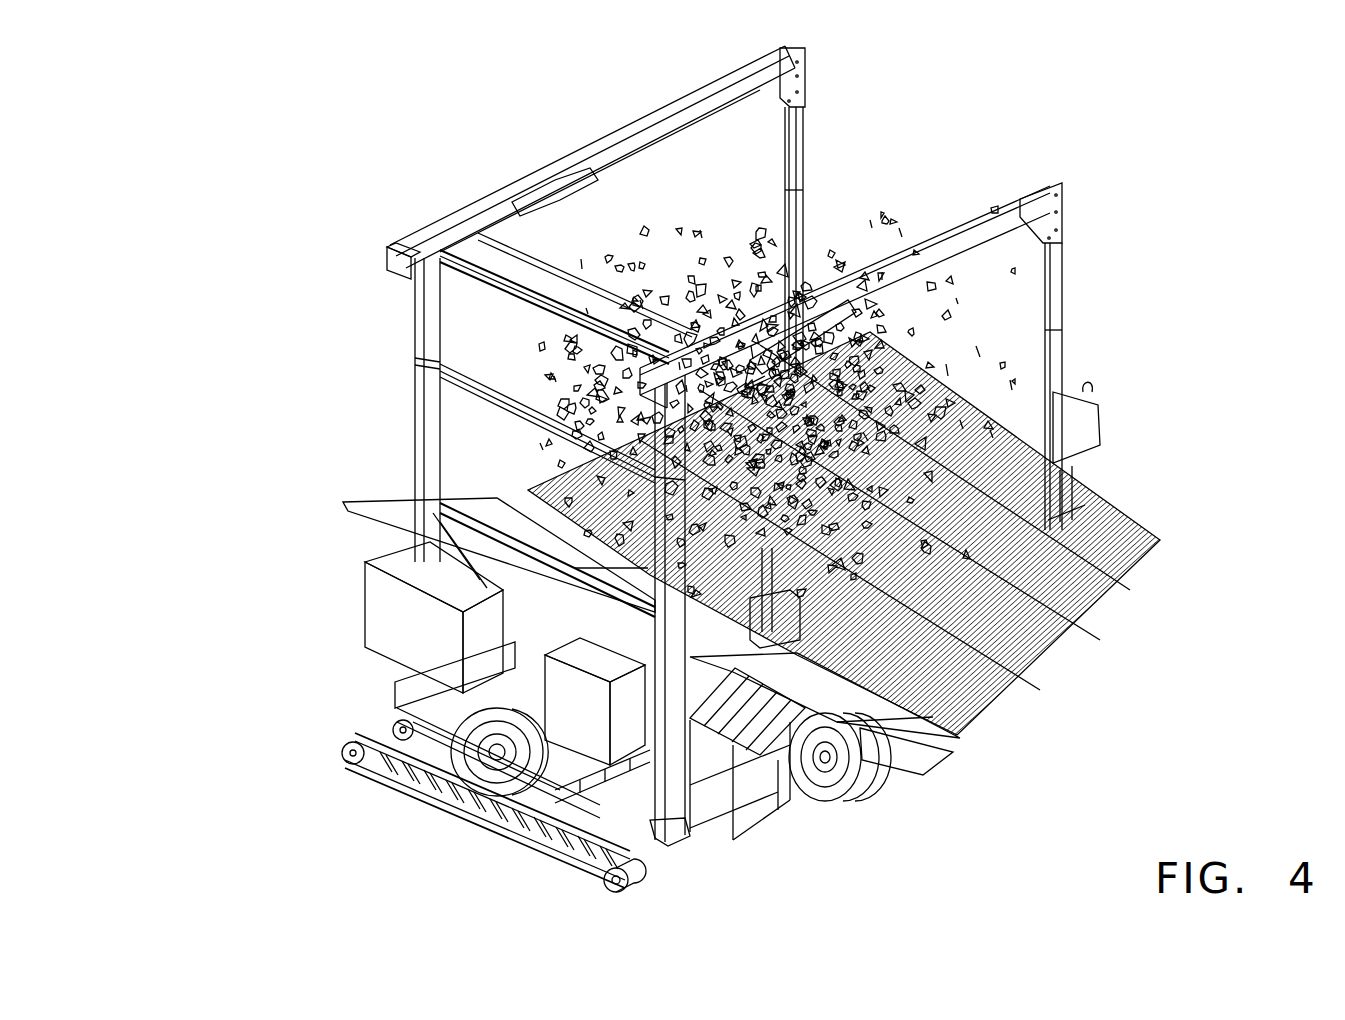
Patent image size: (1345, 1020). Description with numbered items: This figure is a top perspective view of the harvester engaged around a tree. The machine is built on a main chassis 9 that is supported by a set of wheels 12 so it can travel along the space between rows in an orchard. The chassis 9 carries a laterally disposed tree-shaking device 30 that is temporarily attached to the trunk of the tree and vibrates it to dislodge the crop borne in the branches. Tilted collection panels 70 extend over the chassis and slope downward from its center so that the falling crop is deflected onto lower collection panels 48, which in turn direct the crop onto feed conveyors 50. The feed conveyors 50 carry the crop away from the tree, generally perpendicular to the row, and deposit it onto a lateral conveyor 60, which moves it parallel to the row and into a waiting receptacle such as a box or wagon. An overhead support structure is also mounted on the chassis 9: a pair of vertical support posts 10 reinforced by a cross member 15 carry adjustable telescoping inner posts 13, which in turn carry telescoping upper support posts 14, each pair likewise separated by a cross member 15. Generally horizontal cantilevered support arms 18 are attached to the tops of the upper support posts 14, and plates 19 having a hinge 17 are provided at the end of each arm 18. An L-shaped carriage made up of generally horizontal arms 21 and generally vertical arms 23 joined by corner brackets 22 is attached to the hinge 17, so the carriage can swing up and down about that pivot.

The main chassis 9 is at (747, 815).
The vertical support posts 10 is at (413, 528).
The wheels 12 is at (350, 755).
The telescoping inner posts 13 is at (414, 422).
The upper support posts 14 is at (430, 305).
The cross member 15 is at (495, 226).
The hinge 17 is at (552, 188).
The cantilevered support arms 18 is at (458, 206).
The plates 19 is at (532, 200).
The horizontal arms 21 is at (722, 96).
The corner brackets 22 is at (808, 97).
The vertical arms 23 is at (801, 147).
The tree-shaking device 30 is at (745, 603).
The lower collection panels 48 is at (942, 752).
The feed conveyors 50 is at (400, 700).
The lateral conveyor 60 is at (580, 829).
The collection panels 70 is at (352, 503).